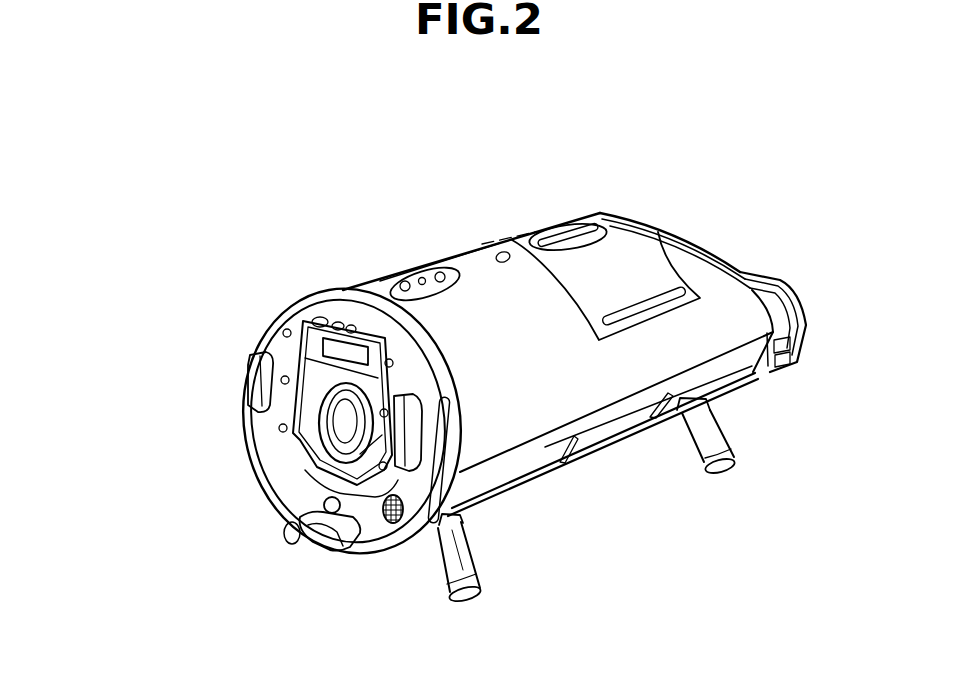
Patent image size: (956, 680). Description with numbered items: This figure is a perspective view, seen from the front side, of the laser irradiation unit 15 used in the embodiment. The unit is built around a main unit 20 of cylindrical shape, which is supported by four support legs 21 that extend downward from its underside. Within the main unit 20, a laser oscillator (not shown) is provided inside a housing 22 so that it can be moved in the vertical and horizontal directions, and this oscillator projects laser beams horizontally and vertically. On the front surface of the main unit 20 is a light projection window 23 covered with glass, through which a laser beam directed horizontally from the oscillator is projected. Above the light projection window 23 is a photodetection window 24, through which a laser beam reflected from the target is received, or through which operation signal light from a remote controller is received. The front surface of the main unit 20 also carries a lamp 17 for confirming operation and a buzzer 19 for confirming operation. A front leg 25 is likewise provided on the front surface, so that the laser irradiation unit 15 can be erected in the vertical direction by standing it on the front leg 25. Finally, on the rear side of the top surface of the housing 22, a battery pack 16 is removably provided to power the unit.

The laser irradiation unit 15 is at (514, 188).
The battery pack 16 is at (637, 270).
The lamp 17 is at (323, 501).
The buzzer 19 is at (392, 525).
The main unit 20 is at (465, 252).
The support legs 21 is at (477, 560).
The housing 22 is at (717, 328).
The light projection window 23 is at (315, 408).
The photodetection window 24 is at (345, 348).
The front leg 25 is at (256, 375).